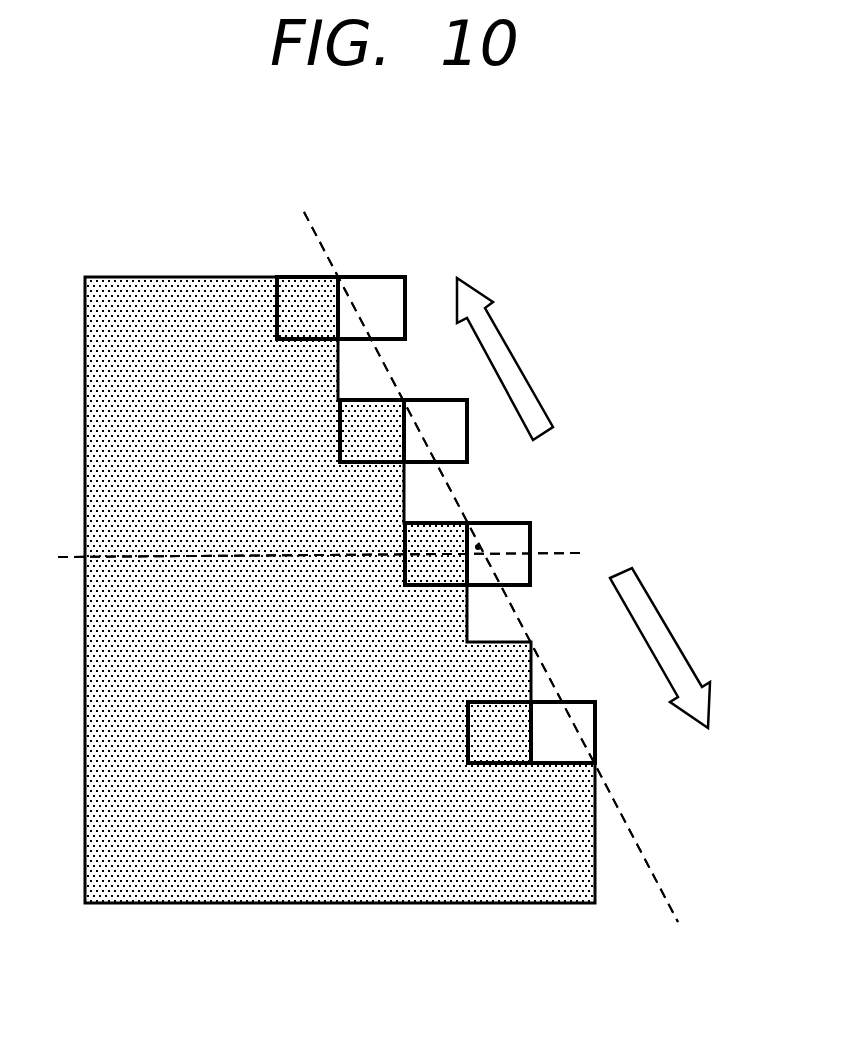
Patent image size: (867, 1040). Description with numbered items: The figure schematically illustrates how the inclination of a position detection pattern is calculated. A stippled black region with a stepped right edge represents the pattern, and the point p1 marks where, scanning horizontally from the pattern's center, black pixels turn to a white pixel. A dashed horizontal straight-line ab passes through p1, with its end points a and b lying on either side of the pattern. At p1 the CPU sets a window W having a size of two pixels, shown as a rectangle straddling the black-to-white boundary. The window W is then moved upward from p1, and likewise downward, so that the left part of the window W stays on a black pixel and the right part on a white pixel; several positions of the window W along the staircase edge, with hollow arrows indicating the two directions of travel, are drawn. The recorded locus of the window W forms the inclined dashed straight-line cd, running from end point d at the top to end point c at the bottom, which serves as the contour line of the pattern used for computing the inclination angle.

The window W is at (382, 277).
The point p1 is at (478, 547).
The end point a of straight-line ab a is at (310, 556).
The end point b of straight-line ab b is at (333, 551).
The end point c of straight-line cd c is at (502, 582).
The end point d of straight-line cd d is at (484, 549).